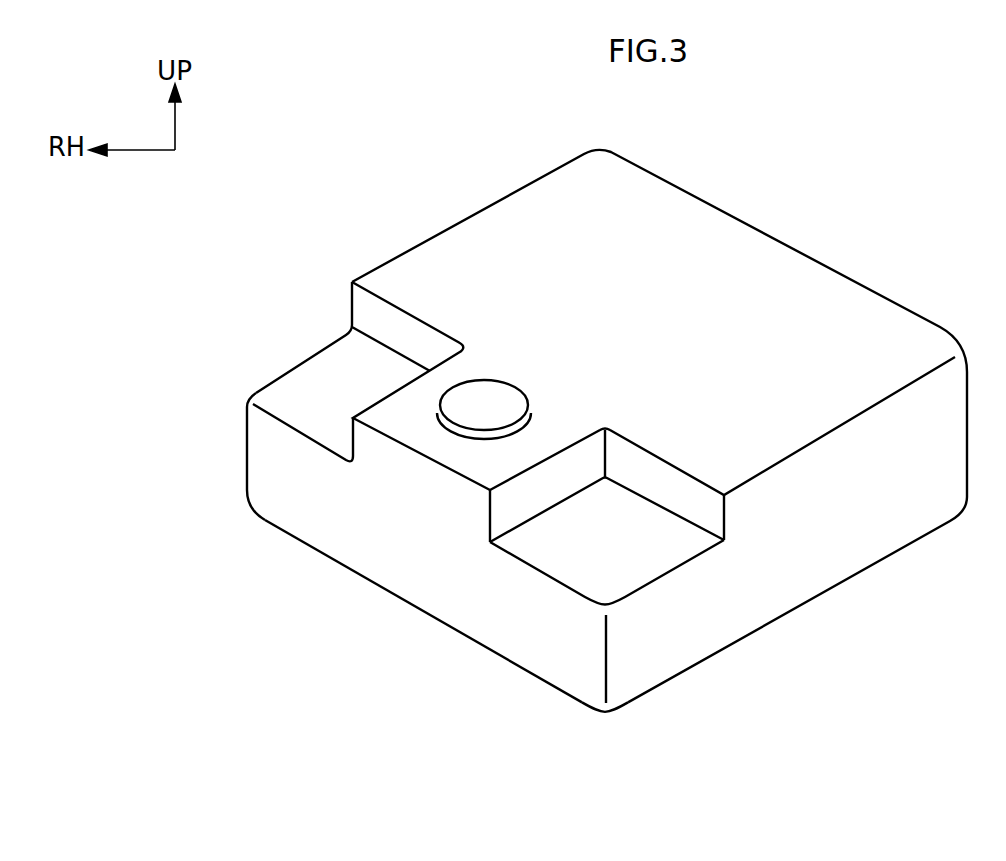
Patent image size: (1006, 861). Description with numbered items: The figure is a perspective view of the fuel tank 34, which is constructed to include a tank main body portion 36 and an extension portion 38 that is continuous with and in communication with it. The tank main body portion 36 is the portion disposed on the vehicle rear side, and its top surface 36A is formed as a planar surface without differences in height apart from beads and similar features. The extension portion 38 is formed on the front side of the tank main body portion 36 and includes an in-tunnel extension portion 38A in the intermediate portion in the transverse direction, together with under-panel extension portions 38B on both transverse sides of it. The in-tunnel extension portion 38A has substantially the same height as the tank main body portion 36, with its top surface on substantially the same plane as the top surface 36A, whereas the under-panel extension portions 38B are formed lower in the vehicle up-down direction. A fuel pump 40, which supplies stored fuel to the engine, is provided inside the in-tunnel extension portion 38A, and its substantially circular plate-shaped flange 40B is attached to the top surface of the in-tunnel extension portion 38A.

The fuel tank 34 is at (423, 113).
The tank main body portion 36 is at (449, 224).
The top surface 36A is at (698, 232).
The extension portion 38 is at (286, 363).
The in-tunnel extension portion 38A is at (408, 563).
The under-panel extension portions 38B is at (297, 497).
The fuel pump 40 is at (566, 387).
The flange 40B is at (511, 384).